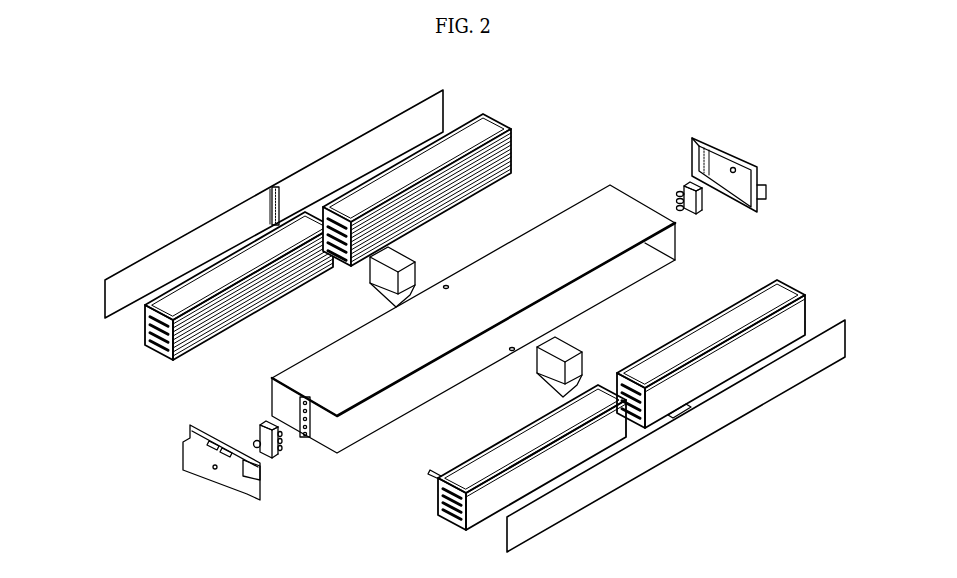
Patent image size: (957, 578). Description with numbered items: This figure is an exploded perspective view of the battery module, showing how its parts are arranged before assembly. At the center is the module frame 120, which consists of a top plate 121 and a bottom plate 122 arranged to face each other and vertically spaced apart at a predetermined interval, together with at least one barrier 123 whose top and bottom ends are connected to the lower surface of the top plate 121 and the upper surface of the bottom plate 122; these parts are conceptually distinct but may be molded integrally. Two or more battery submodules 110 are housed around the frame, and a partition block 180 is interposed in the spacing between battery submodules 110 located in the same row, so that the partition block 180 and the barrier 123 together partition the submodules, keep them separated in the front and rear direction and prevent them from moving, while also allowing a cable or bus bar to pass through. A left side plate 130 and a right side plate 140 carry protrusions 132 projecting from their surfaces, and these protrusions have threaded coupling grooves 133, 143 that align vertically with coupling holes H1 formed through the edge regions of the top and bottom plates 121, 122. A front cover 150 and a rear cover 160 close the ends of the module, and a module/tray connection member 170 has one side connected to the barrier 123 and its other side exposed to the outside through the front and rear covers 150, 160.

The battery submodule 110 is at (501, 113).
The module frame 120 is at (473, 310).
The top plate 121 is at (592, 197).
The bottom plate 122 is at (602, 297).
The barrier 123 is at (317, 421).
The left side plate 130 is at (274, 204).
The protrusion 132 is at (271, 193).
The coupling groove 133 is at (275, 187).
The right side plate 140 is at (676, 436).
The coupling groove 143 is at (692, 410).
The front cover 150 is at (198, 468).
The rear cover 160 is at (718, 142).
The module/tray connection member 170 is at (694, 221).
The partition block 180 is at (554, 342).
The coupling hole H1 is at (444, 286).